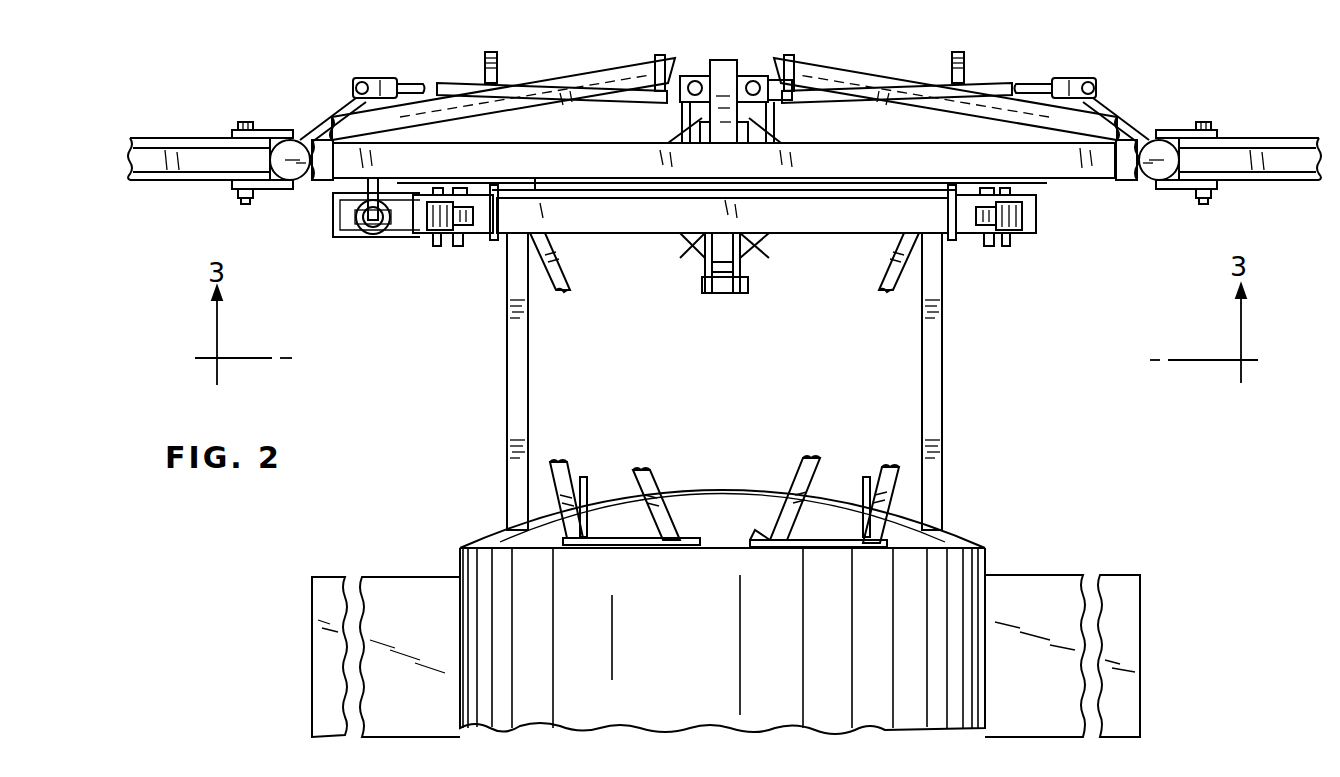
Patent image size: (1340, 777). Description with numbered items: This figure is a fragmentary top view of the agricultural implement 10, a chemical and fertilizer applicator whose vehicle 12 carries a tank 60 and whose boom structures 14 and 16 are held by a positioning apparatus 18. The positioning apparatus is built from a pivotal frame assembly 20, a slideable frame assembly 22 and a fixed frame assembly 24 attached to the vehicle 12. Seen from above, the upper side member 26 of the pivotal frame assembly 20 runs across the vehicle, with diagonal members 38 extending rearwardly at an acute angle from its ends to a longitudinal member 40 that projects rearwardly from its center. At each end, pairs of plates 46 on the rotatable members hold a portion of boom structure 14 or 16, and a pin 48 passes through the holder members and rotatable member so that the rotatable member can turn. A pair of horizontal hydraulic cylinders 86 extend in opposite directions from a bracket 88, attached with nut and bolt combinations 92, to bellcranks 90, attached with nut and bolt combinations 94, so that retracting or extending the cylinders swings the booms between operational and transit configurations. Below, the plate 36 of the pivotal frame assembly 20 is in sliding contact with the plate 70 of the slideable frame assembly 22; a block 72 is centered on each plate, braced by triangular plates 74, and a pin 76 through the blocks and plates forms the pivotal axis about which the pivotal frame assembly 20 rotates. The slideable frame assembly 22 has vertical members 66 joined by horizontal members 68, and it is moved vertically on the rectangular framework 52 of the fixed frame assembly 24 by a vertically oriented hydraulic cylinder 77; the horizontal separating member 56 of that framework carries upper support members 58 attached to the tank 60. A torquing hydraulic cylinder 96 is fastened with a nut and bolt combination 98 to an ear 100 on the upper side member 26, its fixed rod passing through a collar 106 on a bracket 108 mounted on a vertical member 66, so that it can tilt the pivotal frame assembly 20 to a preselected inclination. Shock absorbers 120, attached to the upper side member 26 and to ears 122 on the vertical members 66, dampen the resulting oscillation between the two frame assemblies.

The agricultural implement 10 is at (1215, 82).
The vehicle 12 is at (763, 612).
The boom structure 14 is at (150, 230).
The boom structure 16 is at (1273, 223).
The positioning apparatus 18 is at (1046, 56).
The pivotal frame assembly 20 is at (1095, 188).
The slideable frame assembly 22 is at (960, 250).
The fixed frame assembly 24 is at (496, 362).
The upper side member 26 is at (1110, 170).
The plate 36 is at (808, 170).
The diagonal member 38 is at (593, 84).
The longitudinal member 40 is at (726, 68).
The plate 46 is at (235, 130).
The pin 48 is at (287, 150).
The rectangular framework 52 is at (857, 236).
The horizontal separating member 56 is at (655, 225).
The upper support member 58 is at (640, 468).
The tank 60 is at (965, 608).
The vertical member 66 is at (510, 183).
The horizontal member 68 is at (598, 190).
The plate 70 is at (560, 186).
The block 72 is at (758, 135).
The triangular plate 74 is at (678, 140).
The pin 76 is at (688, 120).
The vertically oriented hydraulic cylinder 77 is at (715, 297).
The horizontal hydraulic cylinder 86 is at (530, 80).
The bracket 88 is at (778, 78).
The bellcrank 90 is at (338, 104).
The nut and bolt combination 92 is at (694, 80).
The nut and bolt combination 94 is at (362, 80).
The torquing hydraulic cylinder 96 is at (370, 236).
The nut and bolt combination 98 is at (356, 218).
The ear 100 is at (365, 230).
The collar 106 is at (333, 213).
The bracket 108 is at (400, 238).
The shock absorber 120 is at (437, 246).
The ear 122 is at (500, 212).